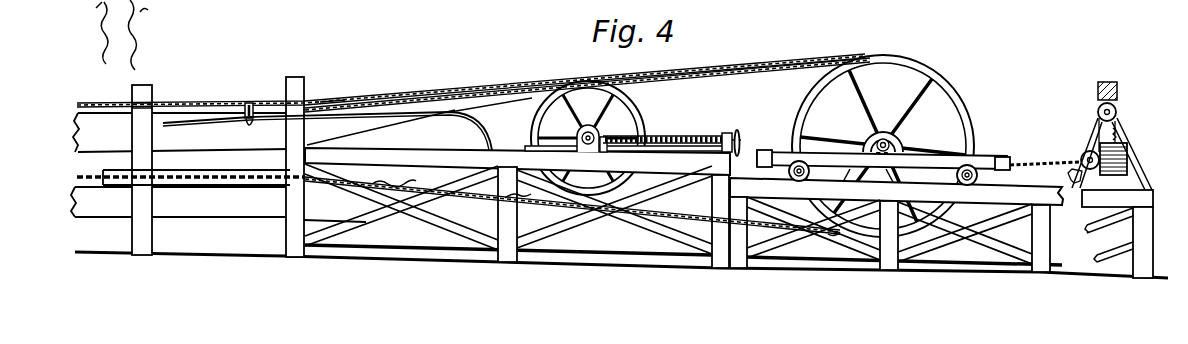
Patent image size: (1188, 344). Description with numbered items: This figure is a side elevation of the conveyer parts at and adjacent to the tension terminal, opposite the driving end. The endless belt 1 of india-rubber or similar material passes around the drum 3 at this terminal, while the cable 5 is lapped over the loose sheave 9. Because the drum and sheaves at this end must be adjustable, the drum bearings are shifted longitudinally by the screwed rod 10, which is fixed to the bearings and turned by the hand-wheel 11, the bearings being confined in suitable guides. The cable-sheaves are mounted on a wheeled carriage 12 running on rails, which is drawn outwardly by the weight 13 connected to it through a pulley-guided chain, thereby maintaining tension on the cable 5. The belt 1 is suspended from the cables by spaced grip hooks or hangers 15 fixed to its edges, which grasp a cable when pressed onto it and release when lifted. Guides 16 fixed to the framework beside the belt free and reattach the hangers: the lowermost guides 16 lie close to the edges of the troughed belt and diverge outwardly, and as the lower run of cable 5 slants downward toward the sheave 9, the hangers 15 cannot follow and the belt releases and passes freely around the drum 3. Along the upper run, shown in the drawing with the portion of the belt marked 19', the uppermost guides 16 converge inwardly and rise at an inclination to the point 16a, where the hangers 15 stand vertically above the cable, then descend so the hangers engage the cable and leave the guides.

The endless belt 1 is at (502, 113).
The drum 3 is at (643, 116).
The cable 5 is at (754, 59).
The loose sheave 9 is at (960, 101).
The screwed rod 10 is at (690, 138).
The hand-wheel 11 is at (741, 141).
The wheeled carriage 12 is at (918, 158).
The weight 13 is at (1128, 149).
The grip hook or hanger 15 is at (251, 102).
The guide 16 is at (229, 121).
The point of guide 16a is at (332, 102).
The board 19' is at (196, 170).